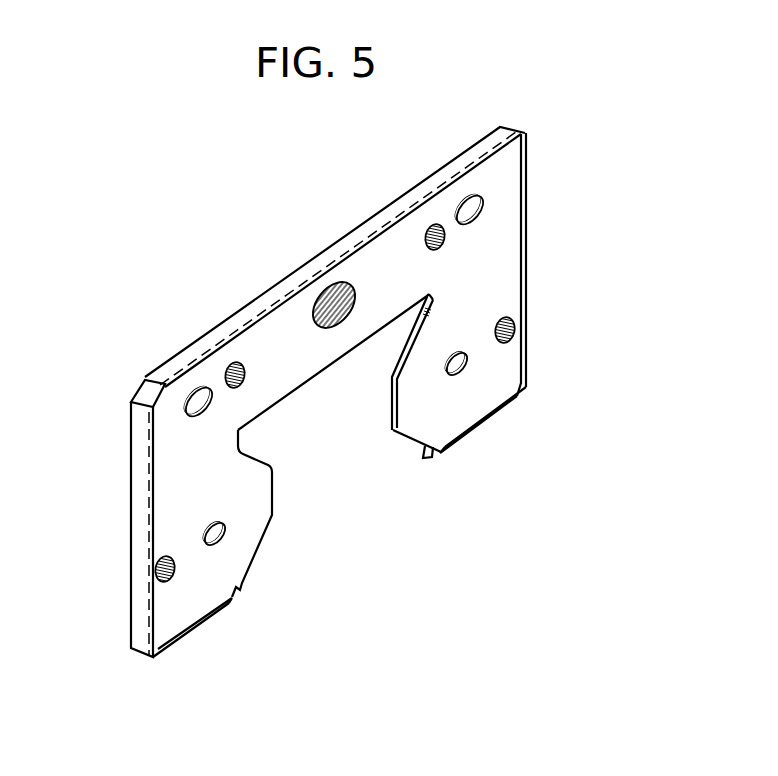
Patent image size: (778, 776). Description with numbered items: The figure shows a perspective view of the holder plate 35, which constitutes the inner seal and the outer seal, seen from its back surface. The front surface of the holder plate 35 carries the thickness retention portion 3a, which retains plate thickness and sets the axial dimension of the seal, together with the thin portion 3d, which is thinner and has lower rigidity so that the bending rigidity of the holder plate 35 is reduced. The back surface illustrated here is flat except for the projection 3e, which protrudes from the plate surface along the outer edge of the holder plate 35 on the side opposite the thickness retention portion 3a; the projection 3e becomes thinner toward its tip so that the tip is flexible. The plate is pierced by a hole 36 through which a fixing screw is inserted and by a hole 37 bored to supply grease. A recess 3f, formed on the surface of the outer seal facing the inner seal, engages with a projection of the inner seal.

The holder plate 35 is at (544, 160).
The thickness retention portion 3a is at (308, 272).
The thin portion 3d is at (253, 340).
The projection 3e is at (393, 222).
The recess 3f is at (466, 368).
The hole 36 is at (436, 224).
The hole 37 is at (323, 292).